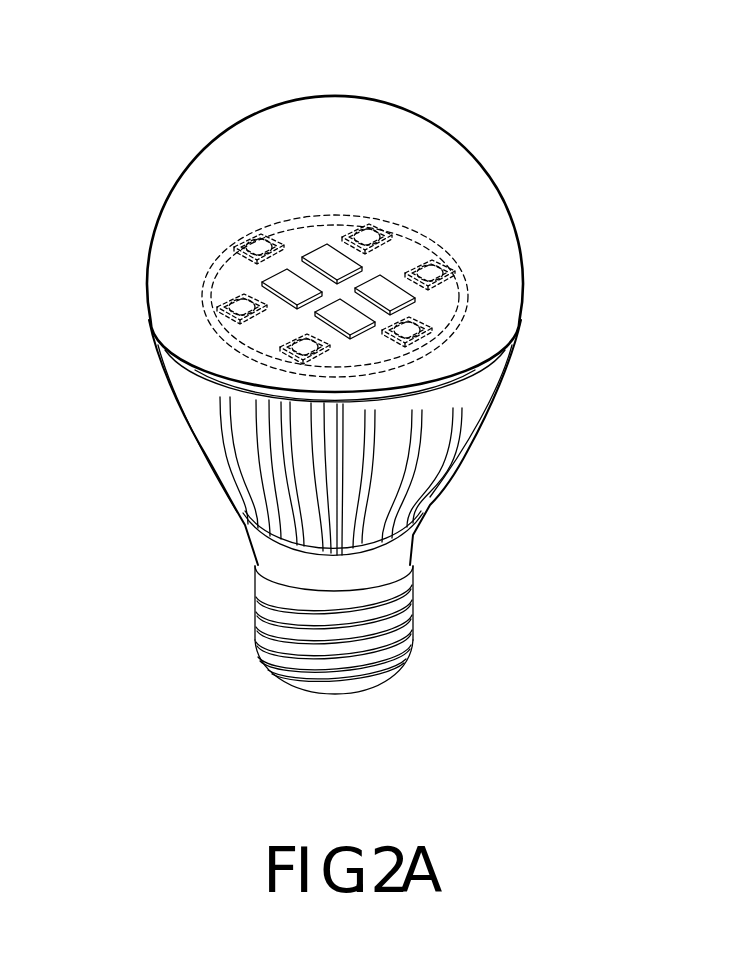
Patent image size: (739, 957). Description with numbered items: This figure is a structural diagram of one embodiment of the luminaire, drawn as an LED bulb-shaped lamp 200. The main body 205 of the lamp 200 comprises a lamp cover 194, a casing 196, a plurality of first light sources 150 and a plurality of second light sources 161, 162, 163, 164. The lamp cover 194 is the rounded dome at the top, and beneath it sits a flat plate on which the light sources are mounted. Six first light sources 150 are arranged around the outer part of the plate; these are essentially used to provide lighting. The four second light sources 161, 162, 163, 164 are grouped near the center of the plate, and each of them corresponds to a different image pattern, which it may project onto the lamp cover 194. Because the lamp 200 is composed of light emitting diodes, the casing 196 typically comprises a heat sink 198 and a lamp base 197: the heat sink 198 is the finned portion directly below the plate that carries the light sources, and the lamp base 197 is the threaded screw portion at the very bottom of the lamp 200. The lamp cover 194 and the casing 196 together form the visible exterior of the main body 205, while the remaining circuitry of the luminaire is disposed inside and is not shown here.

The lamp 200 is at (157, 163).
The lamp cover 194 is at (334, 113).
The first light source 150 is at (387, 232).
The second light source 161 is at (393, 288).
The second light source 162 is at (327, 243).
The second light source 163 is at (287, 266).
The second light source 164 is at (336, 300).
The main body 205 is at (180, 417).
The casing 196 is at (578, 430).
The heat sink 198 is at (460, 418).
The lamp base 197 is at (410, 650).